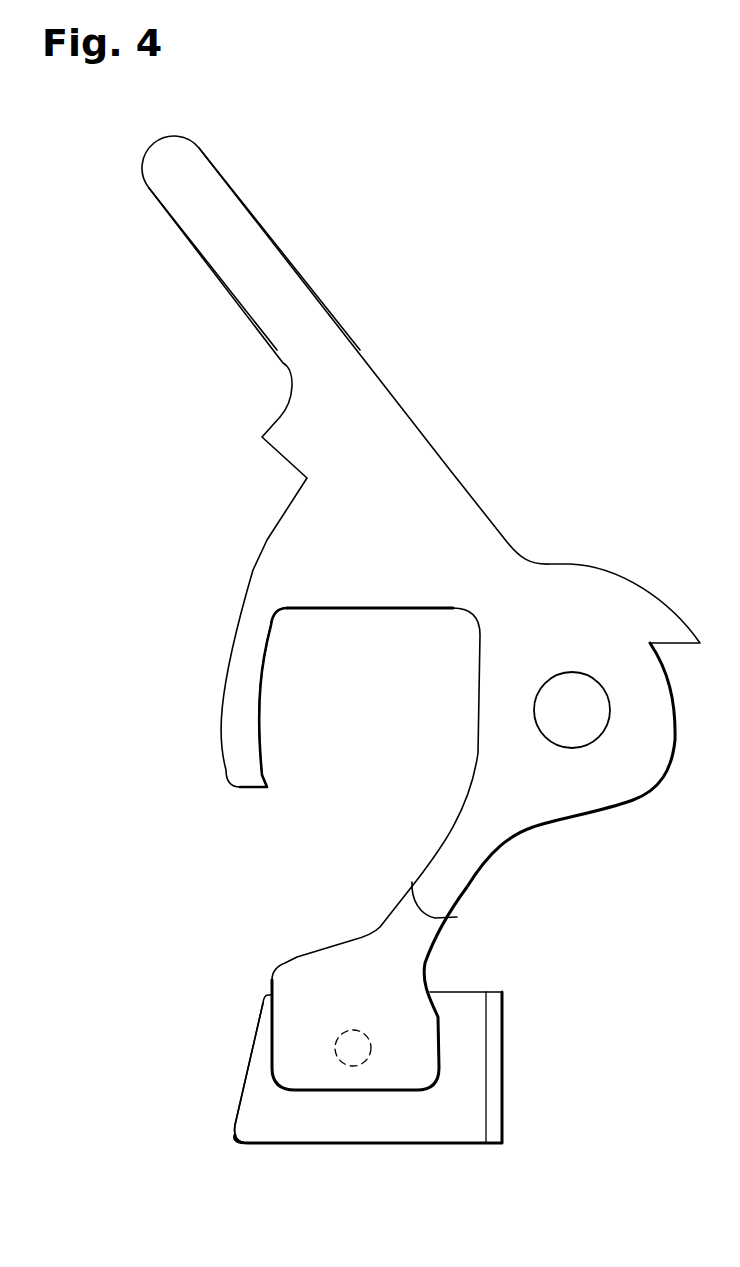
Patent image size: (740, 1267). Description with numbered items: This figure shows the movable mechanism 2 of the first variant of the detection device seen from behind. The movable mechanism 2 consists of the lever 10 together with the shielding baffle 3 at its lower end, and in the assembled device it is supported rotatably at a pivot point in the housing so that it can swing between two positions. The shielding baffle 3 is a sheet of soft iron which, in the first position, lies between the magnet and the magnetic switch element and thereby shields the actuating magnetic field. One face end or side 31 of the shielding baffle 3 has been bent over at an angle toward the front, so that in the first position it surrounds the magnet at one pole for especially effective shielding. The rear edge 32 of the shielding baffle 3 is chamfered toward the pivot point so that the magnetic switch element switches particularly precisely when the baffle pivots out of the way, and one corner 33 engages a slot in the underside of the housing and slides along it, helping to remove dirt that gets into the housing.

The movable mechanism 2 is at (373, 425).
The lever 10 is at (240, 243).
The shielding baffle 3 is at (450, 1123).
The face end 31 is at (493, 1063).
The rear edge 32 is at (258, 1068).
The corner 33 is at (225, 1136).